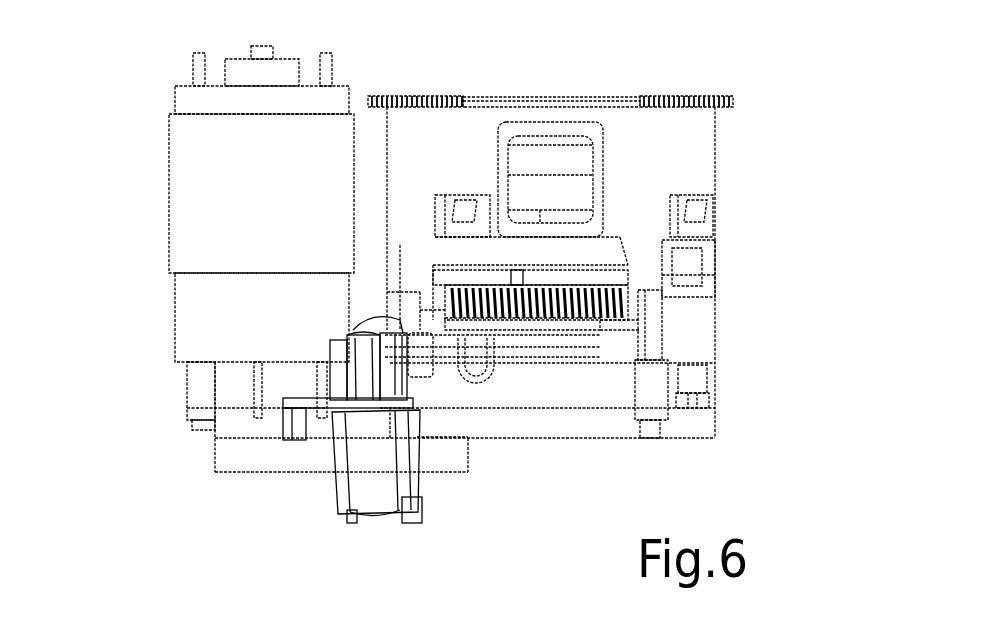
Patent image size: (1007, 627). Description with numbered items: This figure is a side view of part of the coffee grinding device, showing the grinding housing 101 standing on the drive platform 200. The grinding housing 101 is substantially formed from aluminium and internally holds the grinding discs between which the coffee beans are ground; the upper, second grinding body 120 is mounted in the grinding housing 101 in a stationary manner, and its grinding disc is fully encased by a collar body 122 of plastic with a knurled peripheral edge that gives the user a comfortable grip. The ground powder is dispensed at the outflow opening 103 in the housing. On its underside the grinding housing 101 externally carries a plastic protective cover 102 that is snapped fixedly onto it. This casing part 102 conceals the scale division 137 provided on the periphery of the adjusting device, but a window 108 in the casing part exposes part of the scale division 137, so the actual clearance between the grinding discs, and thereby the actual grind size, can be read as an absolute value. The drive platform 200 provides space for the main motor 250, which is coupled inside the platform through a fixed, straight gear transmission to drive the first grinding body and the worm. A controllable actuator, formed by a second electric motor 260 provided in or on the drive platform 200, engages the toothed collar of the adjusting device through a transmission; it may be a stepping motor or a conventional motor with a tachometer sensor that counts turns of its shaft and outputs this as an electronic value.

The grinding housing 101 is at (707, 175).
The plastic protective cover 102 is at (713, 292).
The outflow opening 103 is at (545, 130).
The window 108 is at (530, 270).
The second grinding body 120 is at (601, 76).
The collar body 122 is at (735, 96).
The scale division 137 is at (628, 283).
The drive platform 200 is at (242, 443).
The main motor 250 is at (198, 206).
The electric motor 260 is at (358, 477).